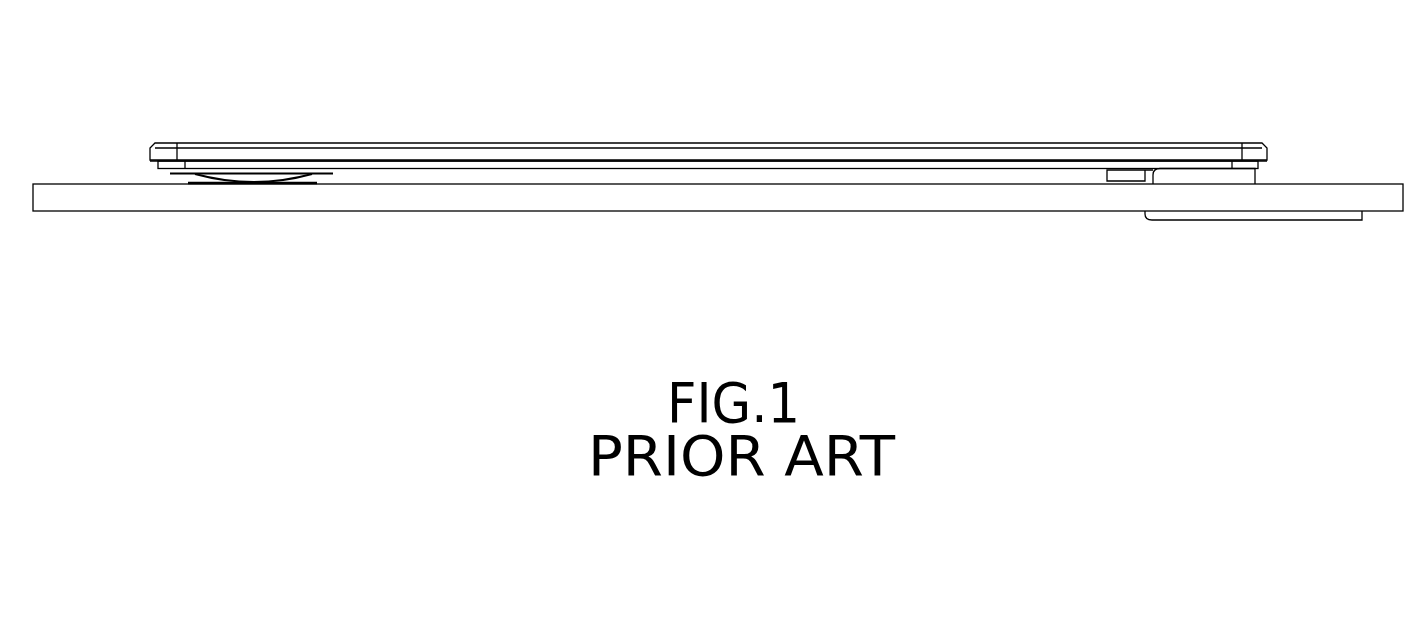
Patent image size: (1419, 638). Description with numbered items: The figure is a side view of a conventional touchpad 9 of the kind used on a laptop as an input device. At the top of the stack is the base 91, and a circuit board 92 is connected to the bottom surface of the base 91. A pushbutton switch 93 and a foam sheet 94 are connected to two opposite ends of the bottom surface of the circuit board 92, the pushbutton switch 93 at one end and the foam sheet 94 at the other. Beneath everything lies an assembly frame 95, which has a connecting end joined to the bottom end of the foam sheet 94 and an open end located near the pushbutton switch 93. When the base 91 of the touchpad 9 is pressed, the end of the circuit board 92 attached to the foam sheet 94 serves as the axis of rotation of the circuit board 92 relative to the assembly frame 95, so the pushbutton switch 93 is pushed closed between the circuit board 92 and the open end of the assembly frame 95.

The touchpad 9 is at (708, 98).
The base 91 is at (615, 152).
The circuit board 92 is at (420, 165).
The pushbutton switch 93 is at (250, 182).
The foam sheet 94 is at (1197, 175).
The assembly frame 95 is at (977, 200).